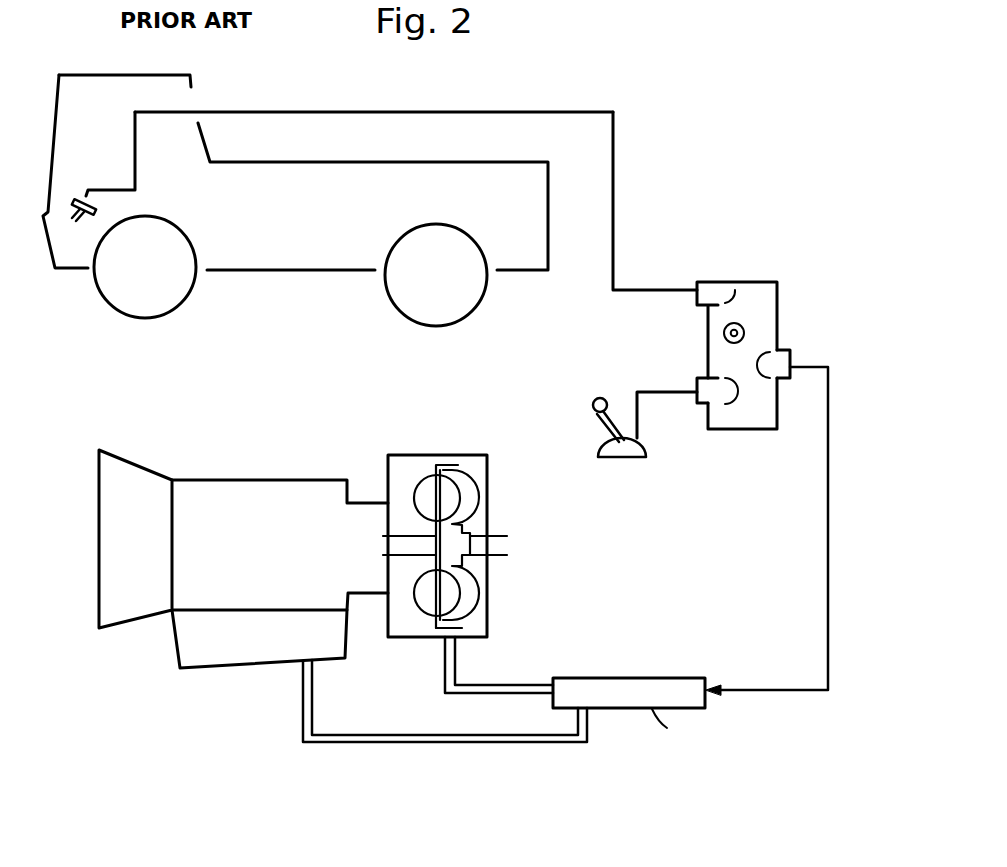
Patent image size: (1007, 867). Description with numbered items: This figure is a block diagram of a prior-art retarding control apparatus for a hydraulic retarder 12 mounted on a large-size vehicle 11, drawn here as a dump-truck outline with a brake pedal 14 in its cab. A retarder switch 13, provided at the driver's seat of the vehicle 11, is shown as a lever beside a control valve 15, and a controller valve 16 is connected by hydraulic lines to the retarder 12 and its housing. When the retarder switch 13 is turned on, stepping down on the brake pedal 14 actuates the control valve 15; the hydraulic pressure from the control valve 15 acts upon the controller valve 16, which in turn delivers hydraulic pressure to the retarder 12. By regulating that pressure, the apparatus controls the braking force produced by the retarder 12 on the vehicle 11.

The large-size vehicle 11 is at (332, 273).
The hydraulic retarder 12 is at (405, 469).
The retarder switch 13 is at (600, 395).
The brake pedal 14 is at (82, 198).
The control valve 15 is at (760, 278).
The controller valve 16 is at (594, 677).